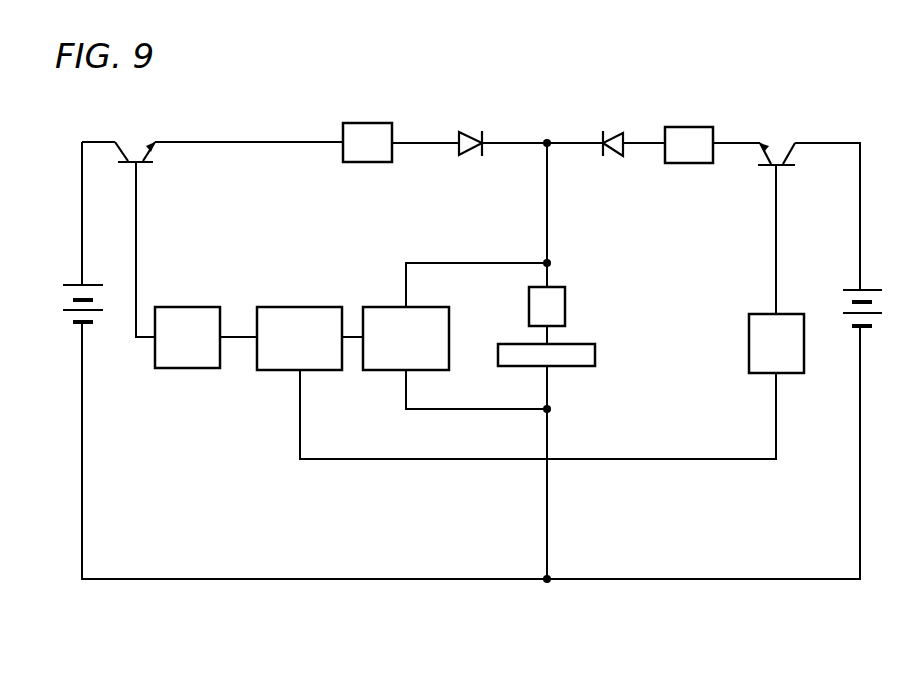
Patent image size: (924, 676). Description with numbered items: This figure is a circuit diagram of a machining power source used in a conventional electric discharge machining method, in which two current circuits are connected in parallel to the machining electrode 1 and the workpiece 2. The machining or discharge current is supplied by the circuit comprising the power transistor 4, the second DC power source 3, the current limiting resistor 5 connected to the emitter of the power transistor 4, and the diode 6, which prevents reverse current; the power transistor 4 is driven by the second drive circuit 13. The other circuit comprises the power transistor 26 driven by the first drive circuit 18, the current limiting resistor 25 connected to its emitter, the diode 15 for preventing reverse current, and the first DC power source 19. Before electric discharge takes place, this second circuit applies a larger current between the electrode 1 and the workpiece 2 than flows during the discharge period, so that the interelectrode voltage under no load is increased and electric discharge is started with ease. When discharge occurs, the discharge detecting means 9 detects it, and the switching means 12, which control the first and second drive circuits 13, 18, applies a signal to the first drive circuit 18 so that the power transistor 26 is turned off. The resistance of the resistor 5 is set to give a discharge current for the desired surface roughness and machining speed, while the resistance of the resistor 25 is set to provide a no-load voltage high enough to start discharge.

The machining electrode 1 is at (565, 303).
The workpiece 2 is at (595, 358).
The second DC power source 3 is at (65, 298).
The power transistor 4 is at (142, 147).
The current limiting resistor 5 is at (343, 126).
The diode 6 is at (472, 134).
The discharge detecting means 9 is at (375, 306).
The switching means 12 is at (280, 306).
The second drive circuit 13 is at (188, 306).
The diode 15 is at (612, 133).
The first drive circuit 18 is at (749, 340).
The first DC power source 19 is at (877, 300).
The current limiting resistor 25 is at (692, 126).
The power transistor 26 is at (783, 150).